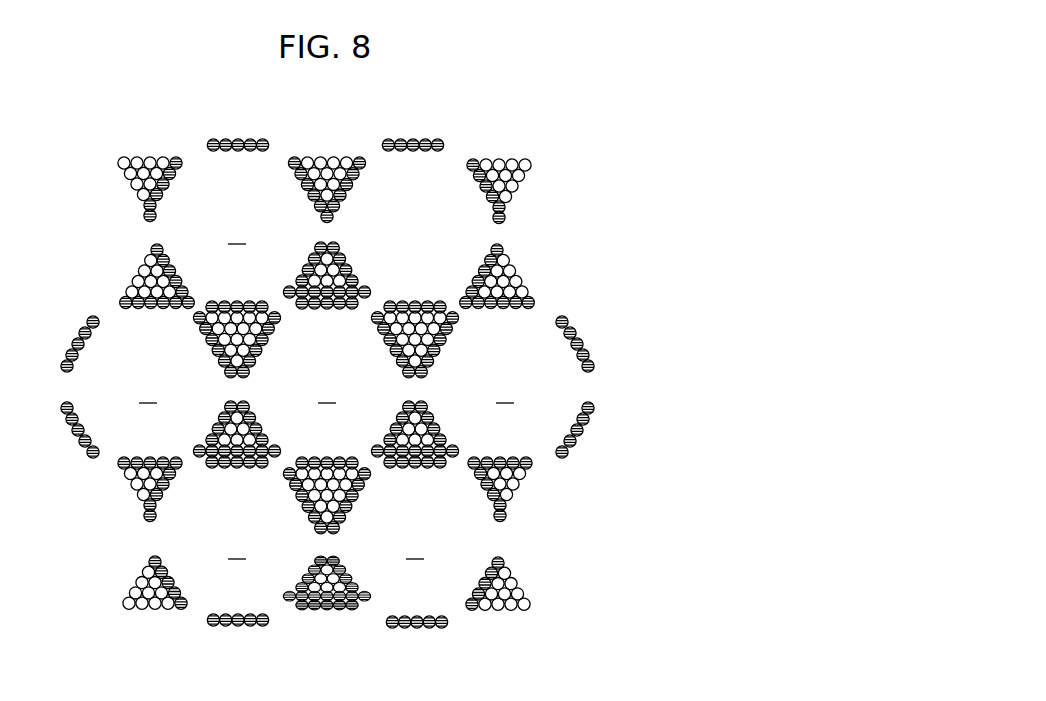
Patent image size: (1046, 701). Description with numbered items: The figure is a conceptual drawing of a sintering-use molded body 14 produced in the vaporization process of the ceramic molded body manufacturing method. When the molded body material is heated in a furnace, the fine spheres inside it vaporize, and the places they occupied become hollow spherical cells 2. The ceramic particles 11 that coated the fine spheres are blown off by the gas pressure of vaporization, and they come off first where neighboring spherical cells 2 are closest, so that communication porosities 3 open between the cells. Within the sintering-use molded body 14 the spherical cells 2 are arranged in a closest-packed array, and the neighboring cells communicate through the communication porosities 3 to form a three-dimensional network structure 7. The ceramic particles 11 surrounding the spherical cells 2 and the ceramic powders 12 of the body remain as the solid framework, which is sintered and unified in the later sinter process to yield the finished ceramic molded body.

The spherical cell 2 is at (458, 193).
The communication porosity 3 is at (467, 305).
The three-dimensional network structure 7 is at (722, 152).
The ceramic particle 11 is at (422, 146).
The ceramic powder 12 is at (140, 268).
The sintering-use molded body 14 is at (602, 336).